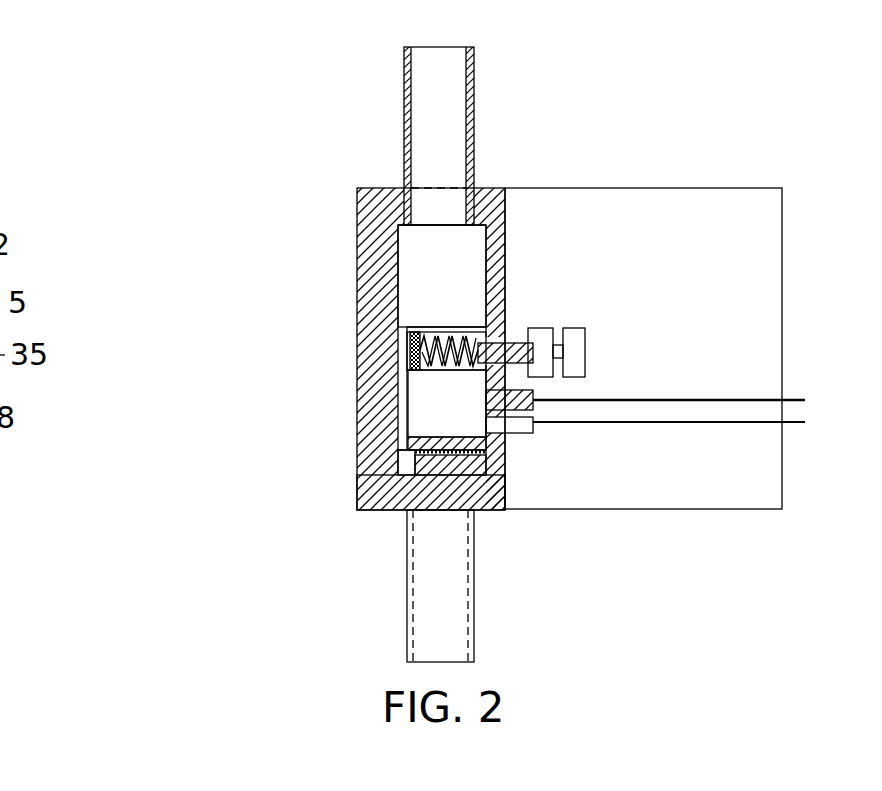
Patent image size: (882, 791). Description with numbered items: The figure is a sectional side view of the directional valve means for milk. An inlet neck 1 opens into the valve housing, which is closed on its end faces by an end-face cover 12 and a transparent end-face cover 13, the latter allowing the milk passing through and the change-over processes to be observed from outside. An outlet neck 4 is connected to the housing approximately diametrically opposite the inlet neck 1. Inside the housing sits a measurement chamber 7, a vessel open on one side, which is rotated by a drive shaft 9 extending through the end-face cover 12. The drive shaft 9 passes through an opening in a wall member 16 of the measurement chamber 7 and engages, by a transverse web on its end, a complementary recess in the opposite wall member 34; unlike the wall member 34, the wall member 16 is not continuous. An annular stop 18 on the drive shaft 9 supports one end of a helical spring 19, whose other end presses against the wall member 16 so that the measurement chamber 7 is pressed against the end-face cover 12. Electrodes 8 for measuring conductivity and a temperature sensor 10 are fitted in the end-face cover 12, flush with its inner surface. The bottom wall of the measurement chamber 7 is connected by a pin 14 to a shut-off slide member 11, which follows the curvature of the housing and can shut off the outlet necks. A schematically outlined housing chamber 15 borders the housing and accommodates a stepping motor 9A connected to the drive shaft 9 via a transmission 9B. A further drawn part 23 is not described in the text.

The inlet neck 1 is at (450, 100).
The outlet neck 4 is at (450, 608).
The measurement chamber 7 is at (397, 393).
The electrodes 8 is at (527, 427).
The drive shaft 9 is at (704, 282).
The stepping motor 9A is at (587, 350).
The transmission 9B is at (546, 328).
The temperature sensor 10 is at (540, 392).
The shut-off slide member 11 is at (453, 468).
The end-face cover 12 is at (505, 240).
The end-face cover 13 is at (398, 243).
The pin 14 is at (400, 487).
The housing chamber 15 is at (703, 187).
The wall member 16 is at (503, 338).
The annular stop 18 is at (410, 340).
The helical spring 19 is at (428, 332).
The plate 23 is at (465, 437).
The wall member 34 is at (402, 430).